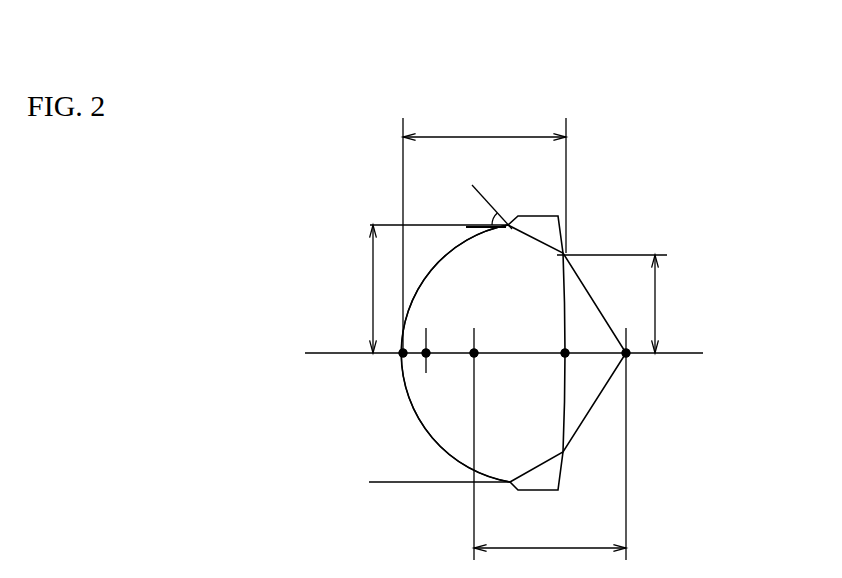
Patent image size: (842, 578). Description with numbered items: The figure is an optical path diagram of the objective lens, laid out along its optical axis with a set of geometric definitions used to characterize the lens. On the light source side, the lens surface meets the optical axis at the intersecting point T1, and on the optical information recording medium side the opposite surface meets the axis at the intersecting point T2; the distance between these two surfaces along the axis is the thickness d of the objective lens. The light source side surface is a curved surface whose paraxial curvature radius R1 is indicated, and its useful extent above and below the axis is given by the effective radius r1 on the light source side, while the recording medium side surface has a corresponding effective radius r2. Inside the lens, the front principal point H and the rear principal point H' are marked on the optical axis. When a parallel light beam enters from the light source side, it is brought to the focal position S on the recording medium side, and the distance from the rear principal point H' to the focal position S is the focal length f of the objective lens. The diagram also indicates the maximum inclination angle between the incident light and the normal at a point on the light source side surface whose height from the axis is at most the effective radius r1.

The thickness on the optical axis d is at (484, 123).
The effective radius on the light source side r1 is at (356, 289).
The effective radius on the optical information recording medium side r2 is at (671, 304).
The focal length f is at (550, 561).
The intersecting point of the light source side surface and the optical axis T1 is at (402, 355).
The paraxial curvature radius on the light source side R1 is at (401, 358).
The front principal point H is at (439, 332).
The rear principal point H' is at (489, 332).
The intersecting point of the optical information recording medium side surface and T2 is at (563, 350).
The focal position on the optical information recording medium side S is at (628, 357).